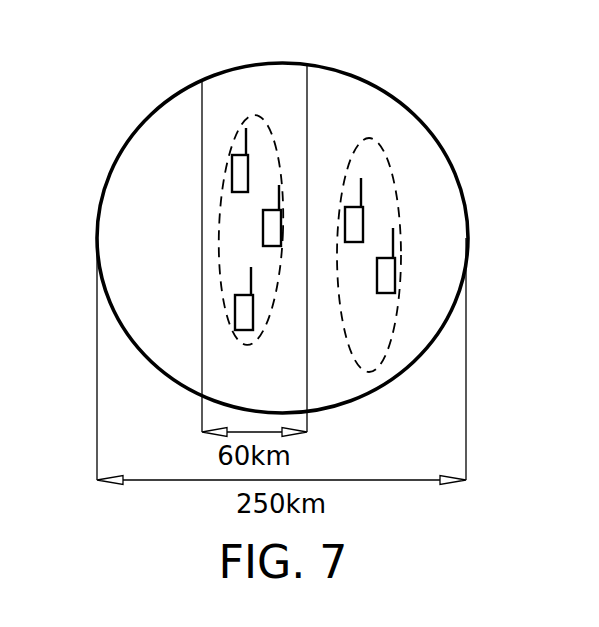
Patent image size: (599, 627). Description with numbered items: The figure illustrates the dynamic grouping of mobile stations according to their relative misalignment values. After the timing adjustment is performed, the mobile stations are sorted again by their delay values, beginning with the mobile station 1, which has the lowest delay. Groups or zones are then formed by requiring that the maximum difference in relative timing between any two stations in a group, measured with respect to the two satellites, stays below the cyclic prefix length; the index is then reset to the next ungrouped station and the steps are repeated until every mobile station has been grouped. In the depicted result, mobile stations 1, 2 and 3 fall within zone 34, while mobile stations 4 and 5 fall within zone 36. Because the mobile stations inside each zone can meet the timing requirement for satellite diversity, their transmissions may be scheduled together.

The zone 34 is at (272, 87).
The zone 36 is at (367, 95).
The mobile station 1 is at (240, 174).
The mobile station 2 is at (244, 314).
The mobile station 3 is at (271, 230).
The mobile station 4 is at (354, 224).
The mobile station 5 is at (386, 274).